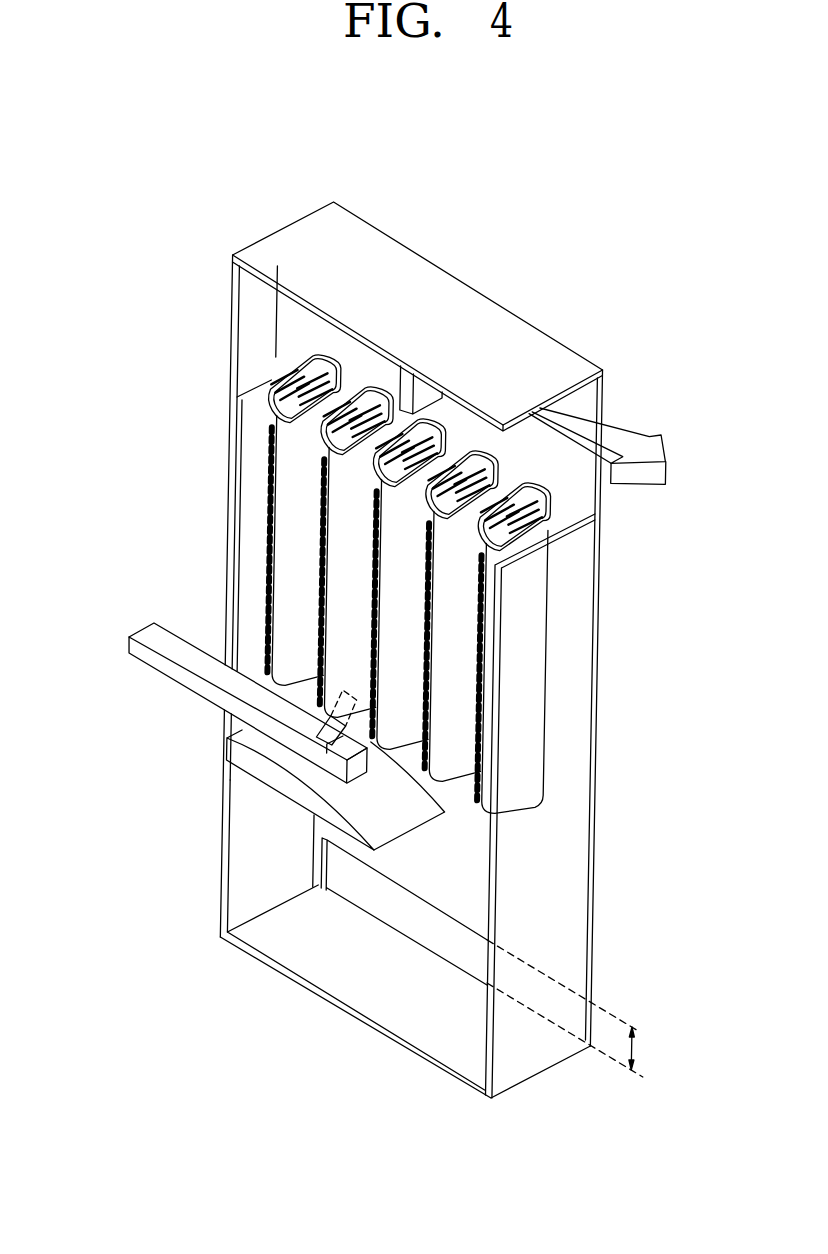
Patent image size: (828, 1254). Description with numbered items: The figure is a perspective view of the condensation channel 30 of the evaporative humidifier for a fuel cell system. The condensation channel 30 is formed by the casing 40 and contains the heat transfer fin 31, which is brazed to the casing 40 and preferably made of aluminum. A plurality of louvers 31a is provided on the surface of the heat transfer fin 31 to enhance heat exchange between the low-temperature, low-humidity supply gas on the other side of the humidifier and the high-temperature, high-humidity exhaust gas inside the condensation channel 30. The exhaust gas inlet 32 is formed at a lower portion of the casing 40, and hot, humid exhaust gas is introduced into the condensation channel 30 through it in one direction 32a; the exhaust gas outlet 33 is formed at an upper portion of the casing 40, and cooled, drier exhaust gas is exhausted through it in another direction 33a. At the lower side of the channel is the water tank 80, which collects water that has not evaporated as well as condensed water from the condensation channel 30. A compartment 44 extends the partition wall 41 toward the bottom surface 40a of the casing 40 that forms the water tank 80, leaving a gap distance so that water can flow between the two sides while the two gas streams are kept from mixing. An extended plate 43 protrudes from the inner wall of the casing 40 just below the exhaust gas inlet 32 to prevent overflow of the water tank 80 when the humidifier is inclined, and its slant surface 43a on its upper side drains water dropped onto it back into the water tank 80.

The condensation channel 30 is at (204, 251).
The heat transfer fin 31 is at (300, 551).
The louvers 31a is at (270, 508).
The exhaust gas inlet 32 is at (251, 734).
The direction 32a is at (208, 664).
The exhaust gas outlet 33 is at (563, 543).
The direction 33a is at (626, 445).
The casing 40 is at (436, 298).
The bottom surface 40a is at (365, 972).
The partition wall 41 is at (567, 489).
The extended plate 43 is at (269, 771).
The slant surface 43a is at (412, 814).
The compartment 44 is at (479, 876).
The water tank 80 is at (254, 832).